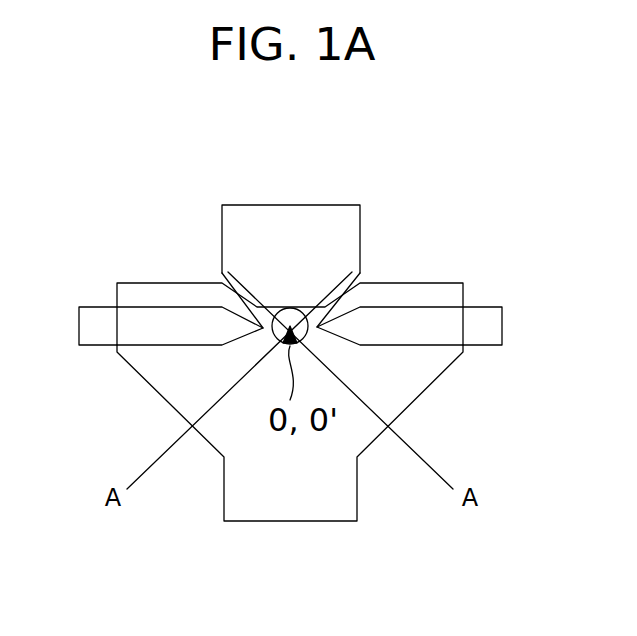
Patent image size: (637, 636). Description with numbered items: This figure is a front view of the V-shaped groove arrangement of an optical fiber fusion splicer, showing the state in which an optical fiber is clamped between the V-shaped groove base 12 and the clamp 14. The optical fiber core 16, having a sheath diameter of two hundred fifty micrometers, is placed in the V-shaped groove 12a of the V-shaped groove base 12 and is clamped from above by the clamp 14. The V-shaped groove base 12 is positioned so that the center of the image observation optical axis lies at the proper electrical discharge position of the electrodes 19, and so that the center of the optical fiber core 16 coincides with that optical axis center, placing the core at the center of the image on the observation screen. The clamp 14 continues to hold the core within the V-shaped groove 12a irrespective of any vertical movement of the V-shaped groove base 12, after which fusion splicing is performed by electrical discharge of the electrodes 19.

The V-shaped groove base 12 is at (277, 522).
The V-shaped groove 12a is at (248, 288).
The clamp 14 is at (293, 213).
The optical fiber core 16 is at (303, 308).
The electrodes 19 is at (93, 307).